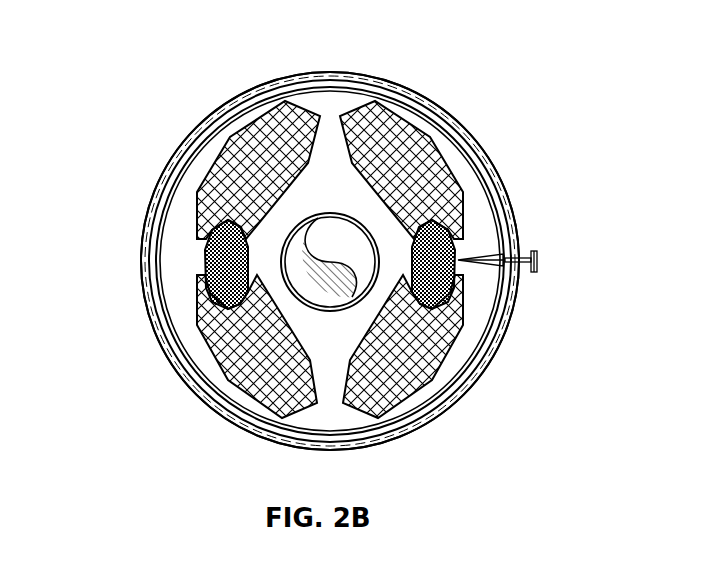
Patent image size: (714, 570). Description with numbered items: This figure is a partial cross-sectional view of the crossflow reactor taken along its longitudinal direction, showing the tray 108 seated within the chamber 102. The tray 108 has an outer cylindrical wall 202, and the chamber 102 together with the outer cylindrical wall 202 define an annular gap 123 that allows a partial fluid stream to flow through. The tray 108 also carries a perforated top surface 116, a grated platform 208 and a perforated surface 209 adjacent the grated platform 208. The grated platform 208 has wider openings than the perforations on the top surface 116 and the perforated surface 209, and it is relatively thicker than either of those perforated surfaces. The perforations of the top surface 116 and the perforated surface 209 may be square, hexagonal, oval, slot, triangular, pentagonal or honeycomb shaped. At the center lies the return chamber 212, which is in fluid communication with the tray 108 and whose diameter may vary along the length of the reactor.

The chamber 102 is at (328, 73).
The tray 108 is at (128, 56).
The top surface 116 is at (213, 260).
The annular gap 123 is at (268, 97).
The outer cylindrical wall 202 is at (170, 187).
The grated platform 208 is at (240, 140).
The perforated surface 209 is at (460, 257).
The return chamber 212 is at (337, 238).